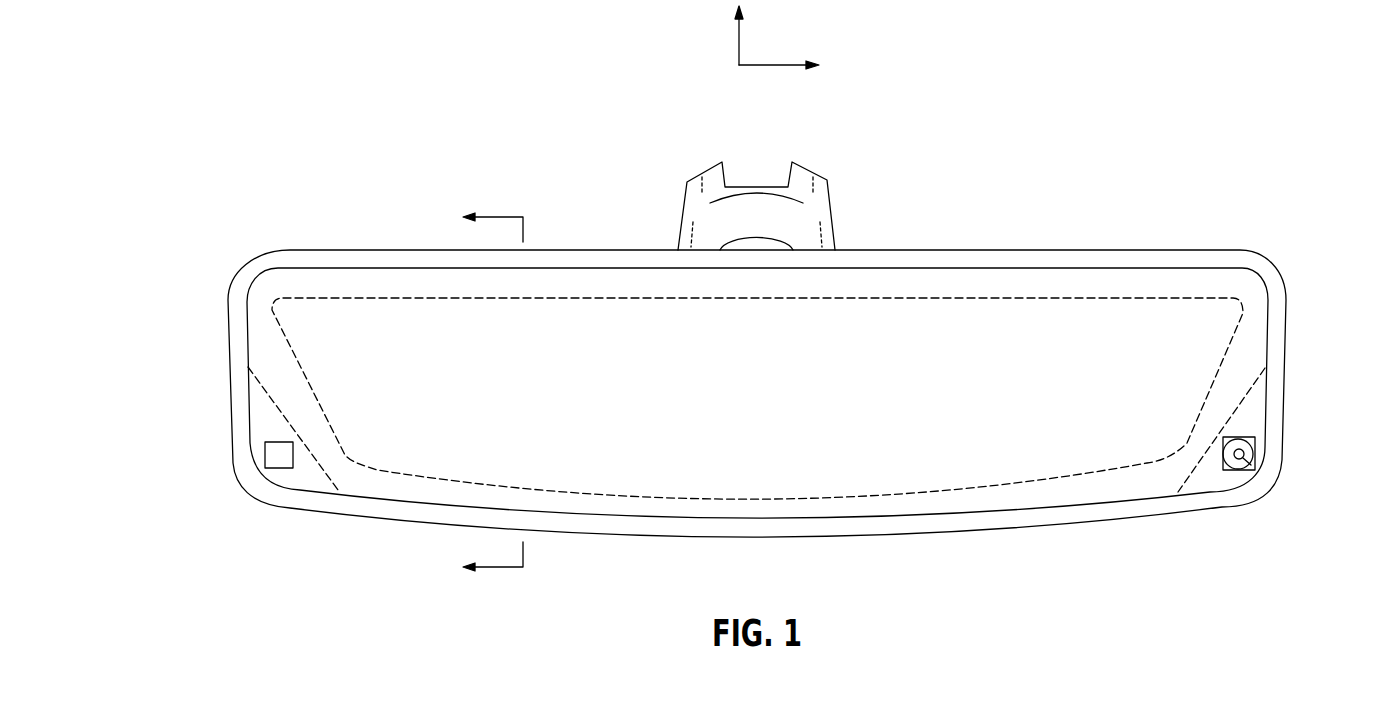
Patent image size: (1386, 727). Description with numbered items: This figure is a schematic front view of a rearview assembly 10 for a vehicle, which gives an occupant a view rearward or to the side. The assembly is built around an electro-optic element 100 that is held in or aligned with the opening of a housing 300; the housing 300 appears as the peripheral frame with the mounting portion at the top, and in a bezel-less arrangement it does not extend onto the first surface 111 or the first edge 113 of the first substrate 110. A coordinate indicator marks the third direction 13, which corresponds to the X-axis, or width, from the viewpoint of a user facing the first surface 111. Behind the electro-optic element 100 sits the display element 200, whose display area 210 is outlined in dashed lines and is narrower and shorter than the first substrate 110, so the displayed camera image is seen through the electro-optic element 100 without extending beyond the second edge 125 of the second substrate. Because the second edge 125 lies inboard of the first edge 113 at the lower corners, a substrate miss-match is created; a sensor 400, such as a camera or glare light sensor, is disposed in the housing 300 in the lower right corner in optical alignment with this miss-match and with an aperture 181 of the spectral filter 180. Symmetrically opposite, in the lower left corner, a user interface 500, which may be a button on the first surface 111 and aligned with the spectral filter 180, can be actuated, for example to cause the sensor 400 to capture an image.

The rearview assembly 10 is at (235, 153).
The third direction 13 is at (785, 51).
The electro-optic element 100 is at (1220, 268).
The first substrate 110 is at (767, 433).
The first edge 113 is at (1186, 490).
The first surface 111 is at (300, 325).
The second edge 125 is at (1250, 390).
The spectral filter 180 is at (1140, 485).
The aperture 181 is at (1257, 462).
The display element 200 is at (1043, 300).
The display area 210 is at (927, 355).
The housing 300 is at (288, 248).
The sensor 400 is at (1245, 437).
The user interface 500 is at (267, 463).